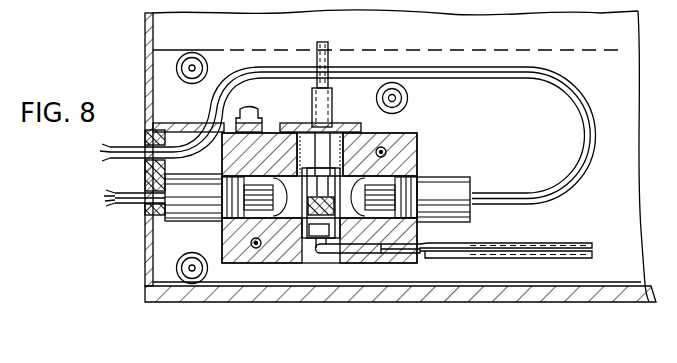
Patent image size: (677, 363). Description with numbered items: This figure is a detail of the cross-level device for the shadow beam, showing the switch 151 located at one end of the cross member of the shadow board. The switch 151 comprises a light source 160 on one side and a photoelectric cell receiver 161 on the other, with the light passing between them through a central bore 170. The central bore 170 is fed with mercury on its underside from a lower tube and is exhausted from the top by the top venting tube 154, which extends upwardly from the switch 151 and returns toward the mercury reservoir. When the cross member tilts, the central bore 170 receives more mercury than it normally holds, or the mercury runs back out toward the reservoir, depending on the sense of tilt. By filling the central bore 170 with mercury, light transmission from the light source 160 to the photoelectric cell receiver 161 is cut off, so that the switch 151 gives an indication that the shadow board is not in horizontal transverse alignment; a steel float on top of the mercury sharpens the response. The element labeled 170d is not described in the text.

The switch 151 is at (232, 250).
The top venting tube 154 is at (328, 62).
The light source 160 is at (178, 190).
The photoelectric cell receiver 161 is at (463, 204).
The central bore 170 is at (316, 194).
The valve drain tube 170d is at (326, 248).